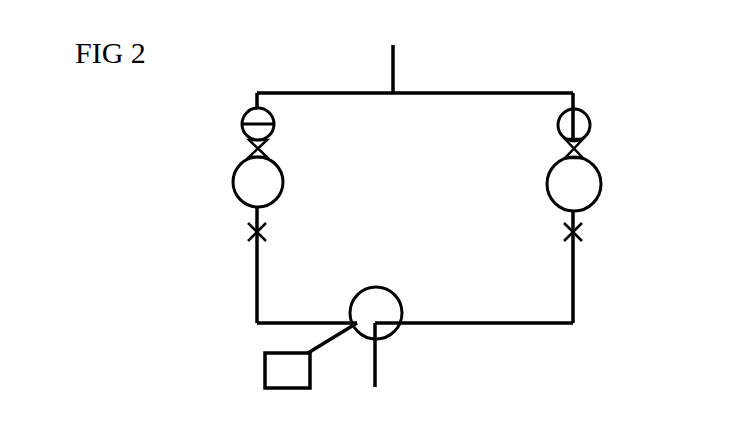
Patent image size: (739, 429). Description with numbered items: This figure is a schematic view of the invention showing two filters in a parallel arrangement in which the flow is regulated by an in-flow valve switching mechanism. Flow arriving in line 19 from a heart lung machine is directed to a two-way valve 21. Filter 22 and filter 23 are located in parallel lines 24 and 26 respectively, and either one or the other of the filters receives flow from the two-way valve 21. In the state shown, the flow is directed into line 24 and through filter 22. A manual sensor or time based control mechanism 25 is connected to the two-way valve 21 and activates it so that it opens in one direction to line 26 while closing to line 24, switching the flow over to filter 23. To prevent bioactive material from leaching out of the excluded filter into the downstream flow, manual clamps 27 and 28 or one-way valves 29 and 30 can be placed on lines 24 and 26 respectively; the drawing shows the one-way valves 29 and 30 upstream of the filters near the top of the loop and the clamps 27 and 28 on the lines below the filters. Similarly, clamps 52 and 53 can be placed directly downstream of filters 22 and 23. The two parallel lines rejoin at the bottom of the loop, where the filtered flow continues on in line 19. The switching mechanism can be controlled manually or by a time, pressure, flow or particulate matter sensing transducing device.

The line 19 is at (397, 60).
The two-way valve 21 is at (397, 338).
The filter 22 is at (585, 188).
The filter 23 is at (262, 175).
The line 24 is at (577, 272).
The manual sensor or time based control mechanism 25 is at (297, 368).
The line 26 is at (253, 272).
The manual clamp 27 is at (563, 233).
The manual clamp 28 is at (268, 232).
The one-way valve 29 is at (588, 112).
The one-way valve 30 is at (240, 113).
The clamp 52 is at (560, 150).
The clamp 53 is at (268, 150).